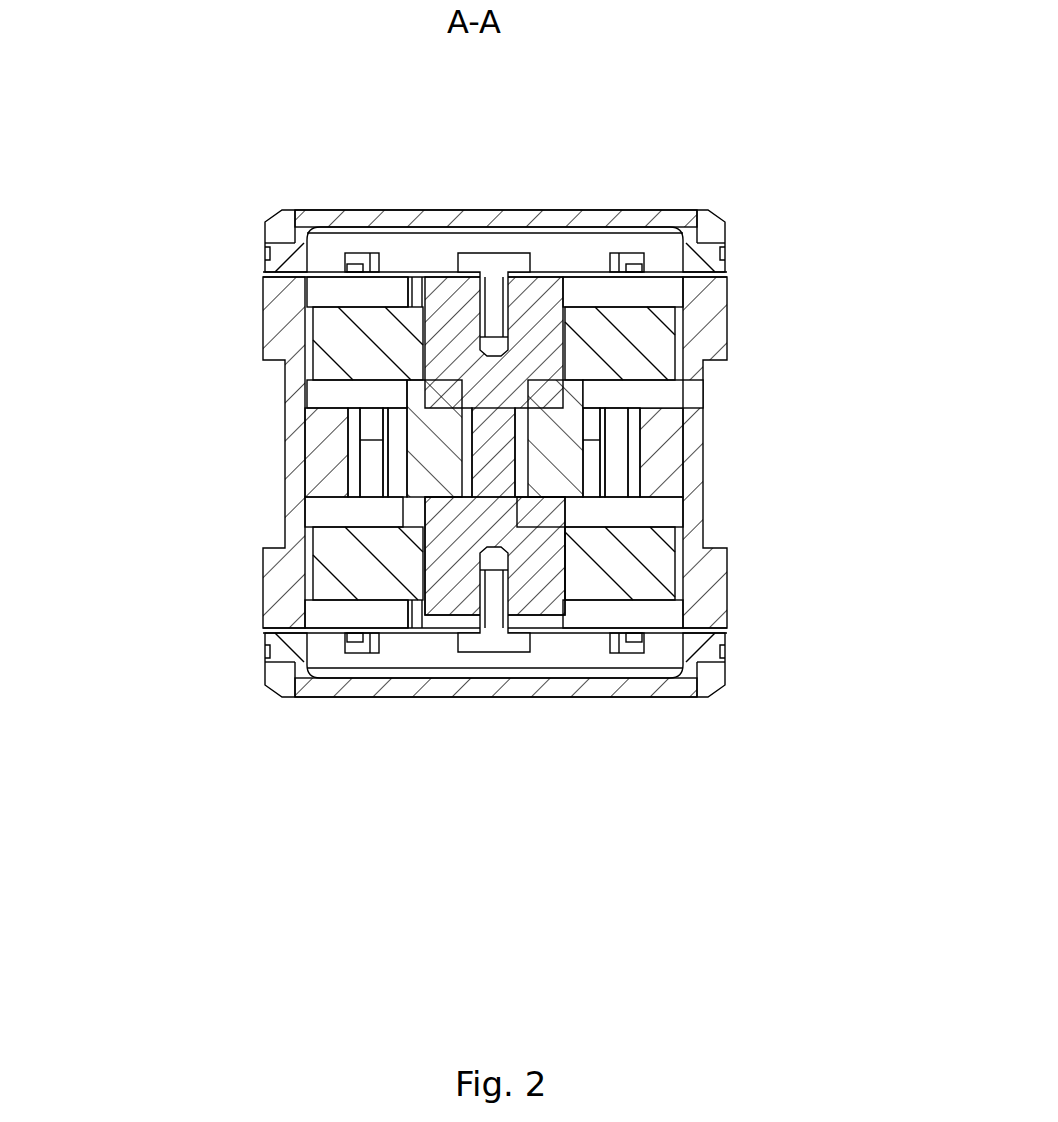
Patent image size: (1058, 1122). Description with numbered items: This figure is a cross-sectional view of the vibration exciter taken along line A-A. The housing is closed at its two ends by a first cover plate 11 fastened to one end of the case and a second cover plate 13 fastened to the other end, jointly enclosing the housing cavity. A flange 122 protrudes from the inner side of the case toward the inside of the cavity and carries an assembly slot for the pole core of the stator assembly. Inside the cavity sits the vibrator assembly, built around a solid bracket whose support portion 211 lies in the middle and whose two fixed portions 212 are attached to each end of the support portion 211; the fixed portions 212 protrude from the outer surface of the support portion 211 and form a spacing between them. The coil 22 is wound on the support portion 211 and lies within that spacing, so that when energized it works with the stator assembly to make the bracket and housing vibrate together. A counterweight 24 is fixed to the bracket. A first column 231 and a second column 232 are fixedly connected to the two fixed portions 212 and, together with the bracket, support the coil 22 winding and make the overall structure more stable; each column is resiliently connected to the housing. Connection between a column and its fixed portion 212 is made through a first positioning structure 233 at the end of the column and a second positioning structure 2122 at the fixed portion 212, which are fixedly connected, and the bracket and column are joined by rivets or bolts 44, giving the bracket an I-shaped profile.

The first cover plate 11 is at (322, 210).
The second cover plate 13 is at (317, 697).
The bolts 44 is at (507, 267).
The first column 231 is at (537, 330).
The second column 232 is at (537, 573).
The first positioning structure 233 is at (473, 405).
The second positioning structure 2122 is at (508, 400).
The fixed portions 212 is at (370, 388).
The coil 22 is at (437, 427).
The support portion 211 is at (483, 477).
The counterweight 24 is at (328, 585).
The flange 122 is at (655, 488).